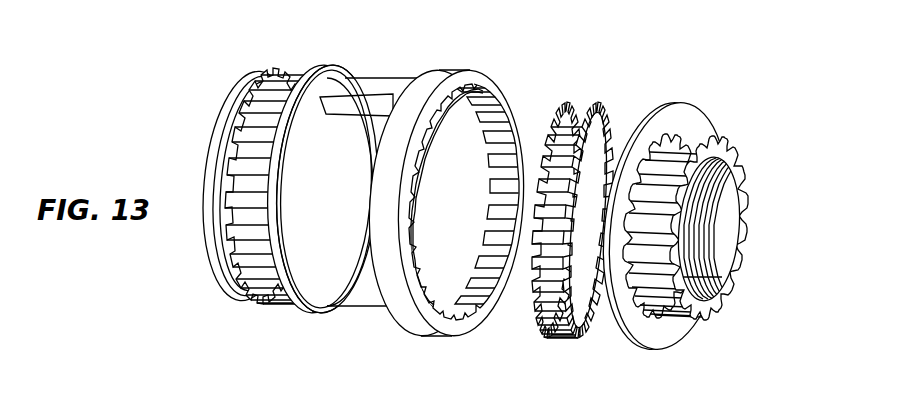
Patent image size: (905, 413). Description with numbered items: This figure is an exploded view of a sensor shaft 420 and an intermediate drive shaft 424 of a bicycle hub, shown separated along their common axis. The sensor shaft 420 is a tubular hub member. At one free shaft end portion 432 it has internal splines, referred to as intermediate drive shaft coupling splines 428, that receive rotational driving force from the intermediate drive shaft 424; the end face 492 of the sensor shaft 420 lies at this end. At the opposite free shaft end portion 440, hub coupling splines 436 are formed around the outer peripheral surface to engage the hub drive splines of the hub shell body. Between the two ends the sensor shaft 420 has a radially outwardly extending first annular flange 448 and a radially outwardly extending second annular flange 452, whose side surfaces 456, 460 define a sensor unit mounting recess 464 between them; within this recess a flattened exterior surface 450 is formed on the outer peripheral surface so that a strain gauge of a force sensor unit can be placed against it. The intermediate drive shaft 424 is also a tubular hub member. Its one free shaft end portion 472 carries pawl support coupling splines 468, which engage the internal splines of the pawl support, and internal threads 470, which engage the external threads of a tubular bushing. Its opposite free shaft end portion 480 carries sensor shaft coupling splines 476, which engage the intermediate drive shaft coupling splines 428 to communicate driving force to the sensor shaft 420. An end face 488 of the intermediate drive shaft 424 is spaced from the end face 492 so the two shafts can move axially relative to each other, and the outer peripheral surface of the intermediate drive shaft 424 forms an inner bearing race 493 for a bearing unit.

The sensor shaft 420 is at (199, 83).
The opposite free shaft end portion 440 is at (217, 311).
The hub coupling splines 436 is at (287, 70).
The first annular flange 448 is at (328, 63).
The flattened exterior surface 450 is at (357, 102).
The side surface 456 is at (302, 298).
The sensor unit mounting recess 464 is at (346, 323).
The second annular flange 452 is at (428, 78).
The side surface 460 is at (397, 325).
The intermediate drive shaft coupling splines 428 is at (488, 103).
The end face 492 is at (453, 293).
The free shaft end portion 432 is at (525, 60).
The opposite free shaft end portion 480 is at (562, 107).
The sensor shaft coupling splines 476 is at (597, 97).
The end face 488 is at (547, 310).
The intermediate drive shaft 424 is at (704, 80).
The inner bearing race 493 is at (633, 100).
The free shaft end portion 472 is at (752, 162).
The pawl support coupling splines 468 is at (718, 138).
The internal threads 470 is at (712, 210).